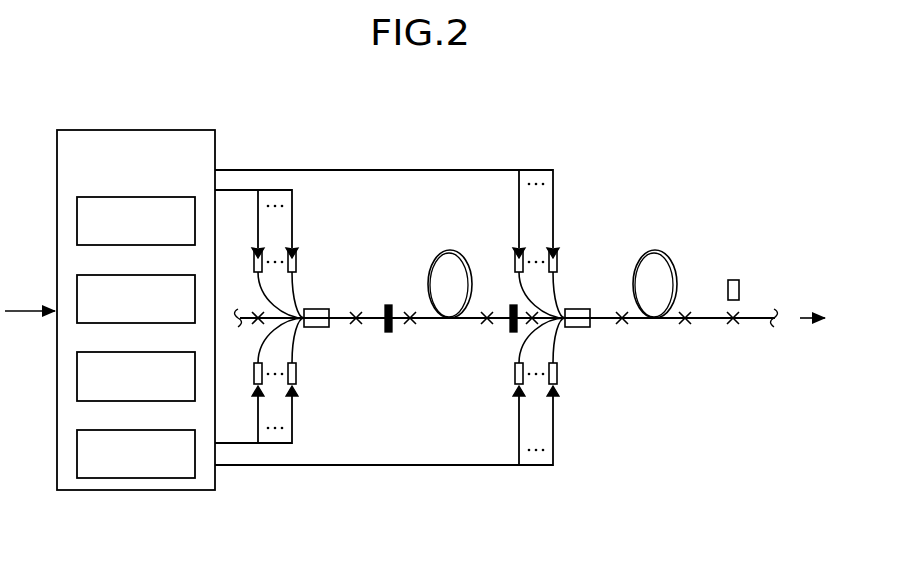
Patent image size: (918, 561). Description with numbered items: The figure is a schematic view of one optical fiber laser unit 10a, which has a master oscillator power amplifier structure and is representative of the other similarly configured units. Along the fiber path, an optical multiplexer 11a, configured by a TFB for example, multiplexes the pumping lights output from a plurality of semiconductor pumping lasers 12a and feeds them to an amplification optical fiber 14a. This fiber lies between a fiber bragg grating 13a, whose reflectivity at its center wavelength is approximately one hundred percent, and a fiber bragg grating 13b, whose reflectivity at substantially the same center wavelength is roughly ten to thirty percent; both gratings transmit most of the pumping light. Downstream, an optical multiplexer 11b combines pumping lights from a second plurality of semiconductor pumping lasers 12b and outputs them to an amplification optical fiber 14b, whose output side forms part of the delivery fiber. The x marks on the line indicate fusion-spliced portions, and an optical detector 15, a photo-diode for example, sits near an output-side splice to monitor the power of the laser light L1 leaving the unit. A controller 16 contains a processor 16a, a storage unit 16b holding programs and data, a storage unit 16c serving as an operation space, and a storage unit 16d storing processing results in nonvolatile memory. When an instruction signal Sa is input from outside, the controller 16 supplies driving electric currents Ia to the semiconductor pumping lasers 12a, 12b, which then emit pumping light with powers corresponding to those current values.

The optical fiber laser unit 10a is at (698, 132).
The optical multiplexer 11a is at (316, 308).
The optical multiplexer 11b is at (579, 308).
The semiconductor pumping lasers 12a is at (294, 244).
The semiconductor pumping lasers 12b is at (558, 242).
The fiber bragg grating 13a is at (390, 300).
The fiber bragg grating 13b is at (511, 338).
The amplification optical fiber 14a is at (451, 244).
The amplification optical fiber 14b is at (656, 244).
The optical detector 15 is at (733, 280).
The controller 16 is at (191, 130).
The processor 16a is at (160, 197).
The storage unit 16b is at (160, 275).
The storage unit 16c is at (160, 352).
The storage unit 16d is at (160, 430).
The instruction signal Sa is at (17, 293).
The driving electric currents Ia is at (258, 182).
The laser light L1 is at (808, 317).